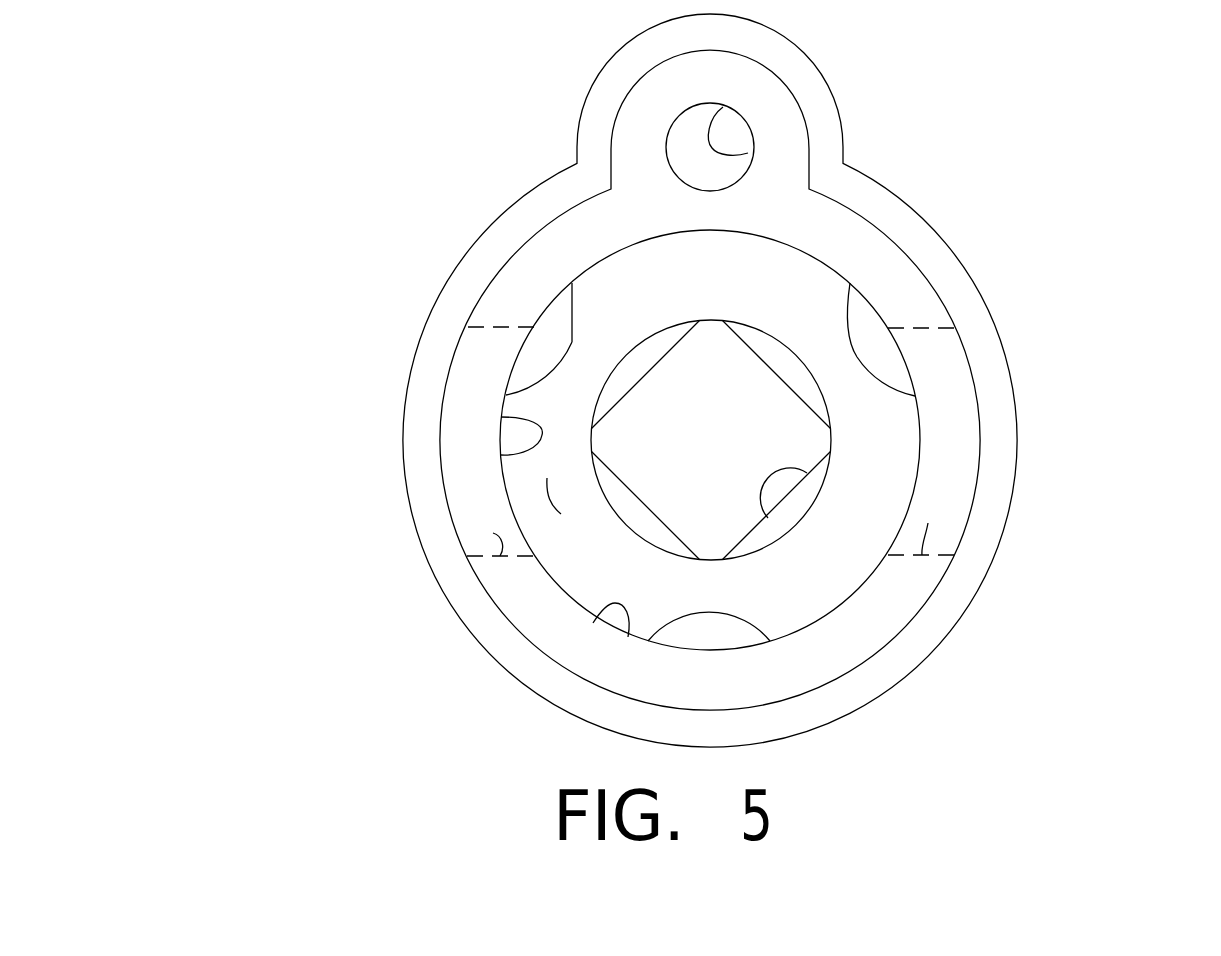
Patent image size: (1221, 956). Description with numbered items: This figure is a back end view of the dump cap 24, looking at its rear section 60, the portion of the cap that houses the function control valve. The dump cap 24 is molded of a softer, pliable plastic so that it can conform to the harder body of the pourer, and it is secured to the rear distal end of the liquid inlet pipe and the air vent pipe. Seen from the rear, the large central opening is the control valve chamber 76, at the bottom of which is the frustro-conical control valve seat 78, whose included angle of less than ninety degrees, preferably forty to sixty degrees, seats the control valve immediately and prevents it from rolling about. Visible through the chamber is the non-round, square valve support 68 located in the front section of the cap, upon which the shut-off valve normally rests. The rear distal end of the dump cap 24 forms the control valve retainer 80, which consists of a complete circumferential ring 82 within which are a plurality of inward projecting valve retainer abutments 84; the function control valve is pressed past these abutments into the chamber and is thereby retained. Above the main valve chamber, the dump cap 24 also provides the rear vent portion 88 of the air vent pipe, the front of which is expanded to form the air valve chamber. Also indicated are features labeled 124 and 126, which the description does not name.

The dump cap 24 is at (718, 430).
The rear section 60 is at (851, 794).
The valve support 68 is at (771, 521).
The control valve chamber 76 is at (583, 565).
The control valve seat 78 is at (550, 498).
The control valve retainer 80 is at (440, 466).
The circumferential ring 82 is at (501, 417).
The valve retainer abutments 84 is at (572, 342).
The rear vent portion 88 is at (748, 153).
The tab 124 is at (593, 623).
The pockets 126 is at (483, 532).